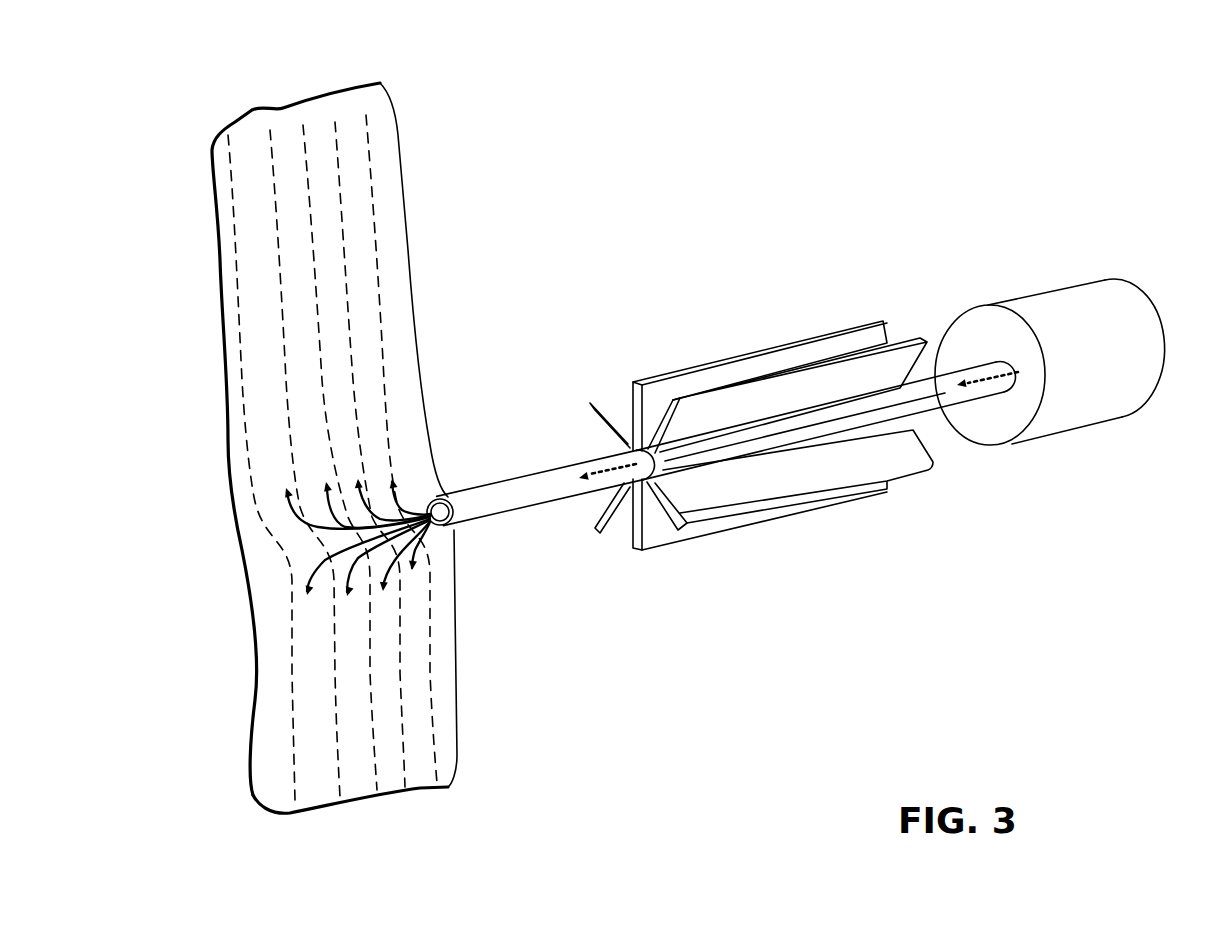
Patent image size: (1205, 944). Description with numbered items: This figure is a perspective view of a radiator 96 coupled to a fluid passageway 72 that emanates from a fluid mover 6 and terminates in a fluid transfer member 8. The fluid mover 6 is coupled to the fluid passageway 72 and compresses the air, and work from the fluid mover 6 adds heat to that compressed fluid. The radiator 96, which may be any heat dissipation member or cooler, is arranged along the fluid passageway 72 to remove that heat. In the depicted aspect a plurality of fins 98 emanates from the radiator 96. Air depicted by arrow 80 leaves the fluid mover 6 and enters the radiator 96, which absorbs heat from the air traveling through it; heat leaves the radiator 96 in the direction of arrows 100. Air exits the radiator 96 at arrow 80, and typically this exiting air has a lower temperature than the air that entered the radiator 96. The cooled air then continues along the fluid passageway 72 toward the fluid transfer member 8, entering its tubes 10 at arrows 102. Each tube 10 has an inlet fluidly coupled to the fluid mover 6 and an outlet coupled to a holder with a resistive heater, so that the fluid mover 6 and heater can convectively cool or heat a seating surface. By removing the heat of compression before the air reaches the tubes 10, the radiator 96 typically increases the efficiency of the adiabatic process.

The fluid mover 6 is at (1065, 314).
The fluid transfer member 8 is at (403, 193).
The tube 10 is at (233, 132).
The fluid passageway 72 is at (544, 492).
The arrow 80 is at (601, 480).
The radiator 96 is at (683, 475).
The fins 98 is at (693, 363).
The arrows 100 is at (741, 368).
The arrows 102 is at (322, 505).